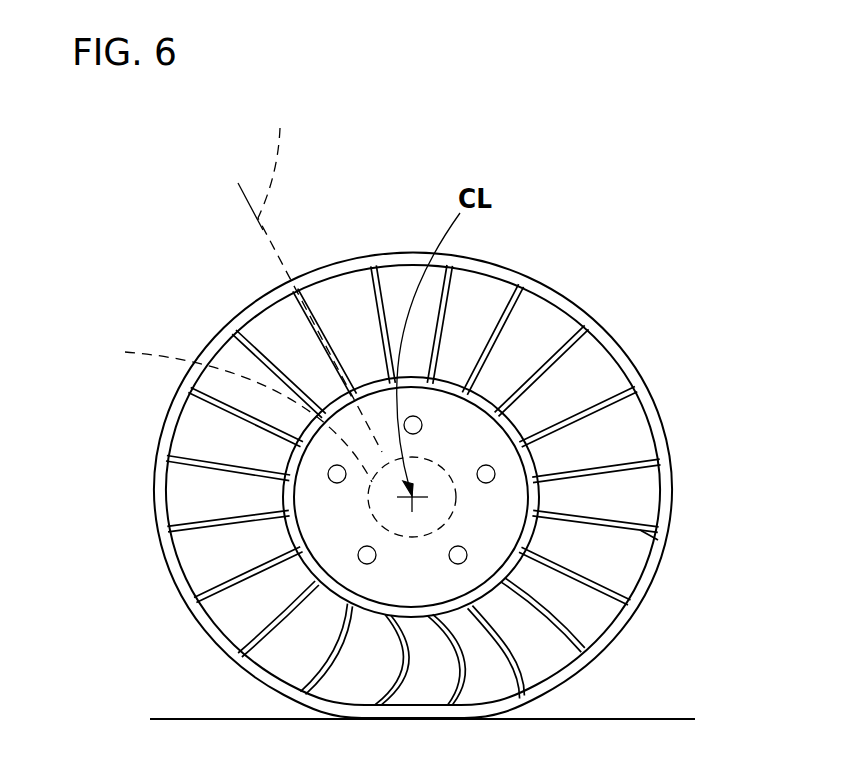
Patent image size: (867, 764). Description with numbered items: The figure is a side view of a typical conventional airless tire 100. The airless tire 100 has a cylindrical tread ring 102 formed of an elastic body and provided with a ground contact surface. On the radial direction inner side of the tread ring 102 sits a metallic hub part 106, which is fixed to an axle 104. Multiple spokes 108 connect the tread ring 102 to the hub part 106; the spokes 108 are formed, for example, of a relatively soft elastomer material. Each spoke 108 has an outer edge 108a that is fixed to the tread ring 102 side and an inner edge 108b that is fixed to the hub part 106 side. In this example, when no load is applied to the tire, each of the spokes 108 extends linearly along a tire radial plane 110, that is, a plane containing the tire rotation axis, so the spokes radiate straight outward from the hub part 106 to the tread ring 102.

The airless tire 100 is at (605, 228).
The tread ring 102 is at (515, 270).
The axle 104 is at (225, 409).
The hub part 106 is at (342, 513).
The spokes 108 is at (617, 462).
The outer edge 108a is at (654, 537).
The inner edge 108b is at (540, 525).
The tire radial plane 110 is at (310, 276).